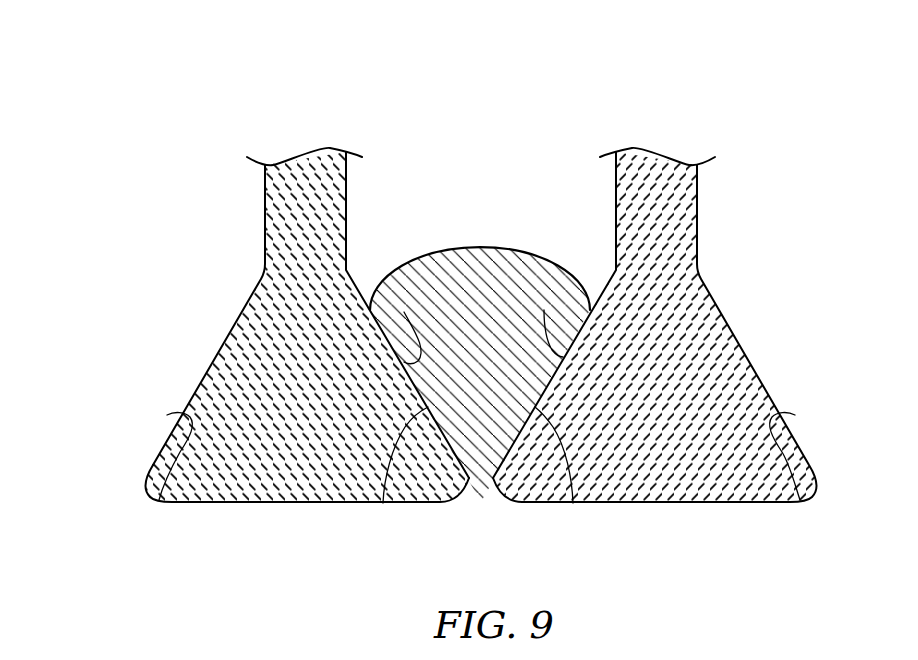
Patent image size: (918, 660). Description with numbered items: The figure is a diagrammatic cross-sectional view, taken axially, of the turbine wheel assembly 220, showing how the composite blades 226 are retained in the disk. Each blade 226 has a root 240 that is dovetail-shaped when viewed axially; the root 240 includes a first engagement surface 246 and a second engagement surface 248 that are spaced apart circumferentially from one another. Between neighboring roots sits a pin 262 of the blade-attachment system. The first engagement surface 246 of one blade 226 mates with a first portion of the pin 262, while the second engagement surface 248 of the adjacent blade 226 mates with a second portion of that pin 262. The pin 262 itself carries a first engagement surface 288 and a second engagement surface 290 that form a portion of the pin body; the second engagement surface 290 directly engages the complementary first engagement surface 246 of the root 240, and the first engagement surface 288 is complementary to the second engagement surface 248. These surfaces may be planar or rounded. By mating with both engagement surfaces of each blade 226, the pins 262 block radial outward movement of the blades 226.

The joint assembly 220 is at (125, 125).
The composite blade 226 is at (223, 258).
The root 240 is at (160, 430).
The first engagement surface 246 is at (544, 310).
The second engagement surface 248 is at (404, 312).
The pin 262 is at (471, 246).
The first engagement surface 288 is at (573, 503).
The second engagement surface 290 is at (383, 503).